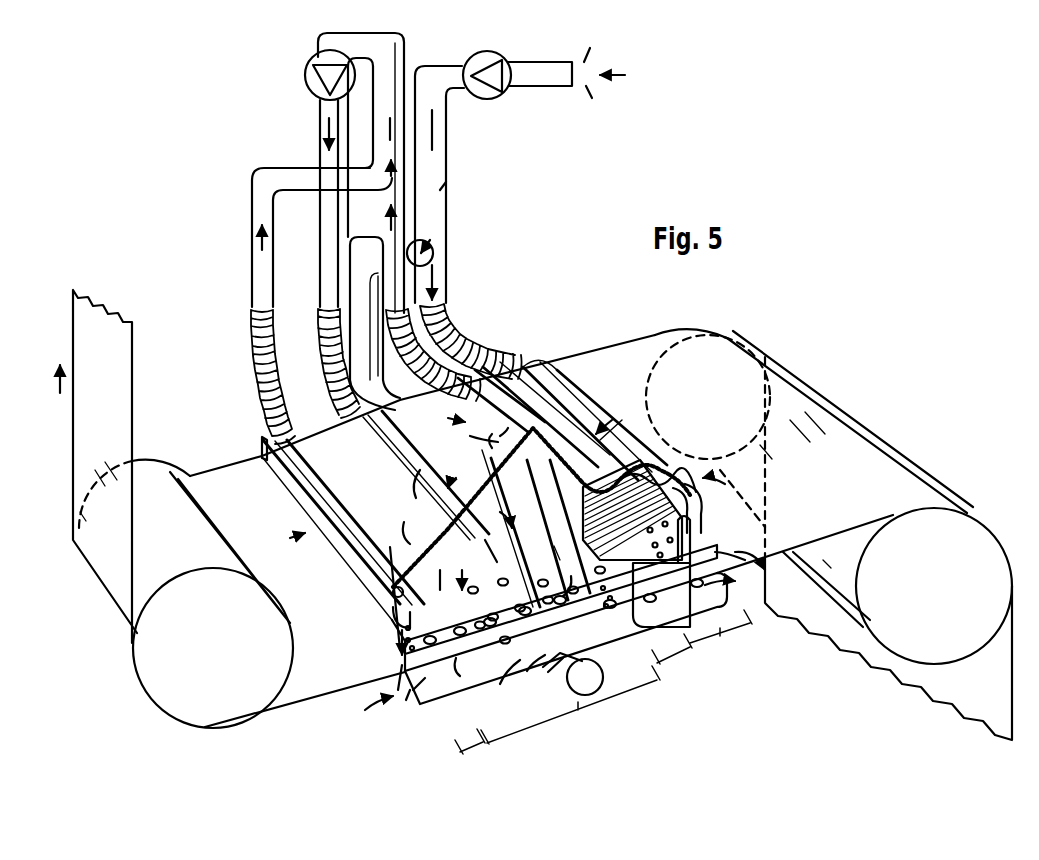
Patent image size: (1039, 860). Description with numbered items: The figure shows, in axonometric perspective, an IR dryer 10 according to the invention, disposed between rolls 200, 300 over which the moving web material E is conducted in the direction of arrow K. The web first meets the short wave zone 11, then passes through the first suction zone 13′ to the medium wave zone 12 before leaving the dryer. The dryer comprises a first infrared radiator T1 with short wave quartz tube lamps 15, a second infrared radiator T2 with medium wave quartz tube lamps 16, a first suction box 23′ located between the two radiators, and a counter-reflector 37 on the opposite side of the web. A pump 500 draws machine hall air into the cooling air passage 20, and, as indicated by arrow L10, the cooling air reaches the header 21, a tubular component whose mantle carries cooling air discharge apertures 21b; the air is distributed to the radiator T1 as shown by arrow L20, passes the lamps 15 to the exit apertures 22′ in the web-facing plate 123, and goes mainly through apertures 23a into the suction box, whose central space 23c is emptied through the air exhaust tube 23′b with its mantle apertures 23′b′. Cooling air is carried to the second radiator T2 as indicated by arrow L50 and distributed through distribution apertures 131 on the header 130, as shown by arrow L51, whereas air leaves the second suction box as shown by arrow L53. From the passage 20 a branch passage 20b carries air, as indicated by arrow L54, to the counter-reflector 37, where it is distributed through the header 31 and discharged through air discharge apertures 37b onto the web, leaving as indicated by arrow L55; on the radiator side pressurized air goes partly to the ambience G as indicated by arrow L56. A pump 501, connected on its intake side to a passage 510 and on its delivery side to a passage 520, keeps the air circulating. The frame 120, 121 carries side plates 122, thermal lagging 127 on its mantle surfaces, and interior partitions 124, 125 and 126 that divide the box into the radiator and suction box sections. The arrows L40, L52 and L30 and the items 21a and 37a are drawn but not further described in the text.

The pump 501 is at (306, 70).
The passage 520 is at (316, 102).
The arrow indicating cooling air flow to the second radiator L50 is at (320, 124).
The passage 510 is at (411, 40).
The pump 500 is at (501, 104).
The ambience G is at (644, 99).
The arrow indicating incoming cooling air L10 is at (448, 128).
The cooling air passage 20 is at (446, 181).
The IR dryer 10 is at (546, 210).
The arrow indicating air exit from the second suction box L53 is at (250, 224).
The passage 20b is at (362, 236).
The arrow indicating air flow L40 is at (400, 193).
The arrow indicating cooling air to the counter-reflector L54 is at (434, 246).
The apertures 23a is at (455, 324).
The header 21 is at (534, 360).
The direction of web travel K is at (58, 380).
The moving web material E is at (107, 417).
The frame 120 is at (300, 411).
The side plates 122 is at (259, 451).
The frame 121 is at (345, 454).
The header 130 is at (388, 453).
The distribution apertures 131 is at (425, 470).
The thermal lagging 127 is at (395, 523).
The partition 124 is at (384, 608).
The arrow indicating air distribution to radiator T2 L51 is at (438, 536).
The arrow indicating air flow L52 is at (446, 584).
The central space of the suction box 23c is at (514, 488).
The partition 125 is at (578, 548).
The medium wave quartz tube lamps 16 is at (510, 562).
The first suction box 23′ is at (490, 401).
The apertures 23′b′ is at (476, 442).
The air exhaust tube 23′b is at (502, 434).
The second infrared radiator T2 is at (464, 468).
The first infrared radiator T1 is at (618, 414).
The header component 21a is at (567, 400).
The partition 126 is at (611, 456).
The cooling air discharge apertures 21b is at (646, 466).
The arrow indicating air distribution to radiator T1 L20 is at (674, 492).
The short wave quartz tube lamps 15 is at (726, 479).
The cooling air discharge apertures 22′ is at (709, 545).
The arrow indicating air going to ambience L56 is at (766, 546).
The roll 300 is at (947, 591).
The roll 200 is at (227, 654).
The counter-reflector 37 is at (472, 686).
The counter-reflector element 37a is at (434, 706).
The air discharge apertures 37b is at (512, 678).
The header 31 is at (550, 676).
The arrow indicating air exit from the counter-reflector side L55 is at (366, 714).
The plate 123 is at (406, 708).
The arrow indicating air flow L30 is at (648, 626).
The medium wave zone 12 is at (570, 705).
The first suction zone 13′ is at (672, 663).
The short wave zone 11 is at (721, 641).